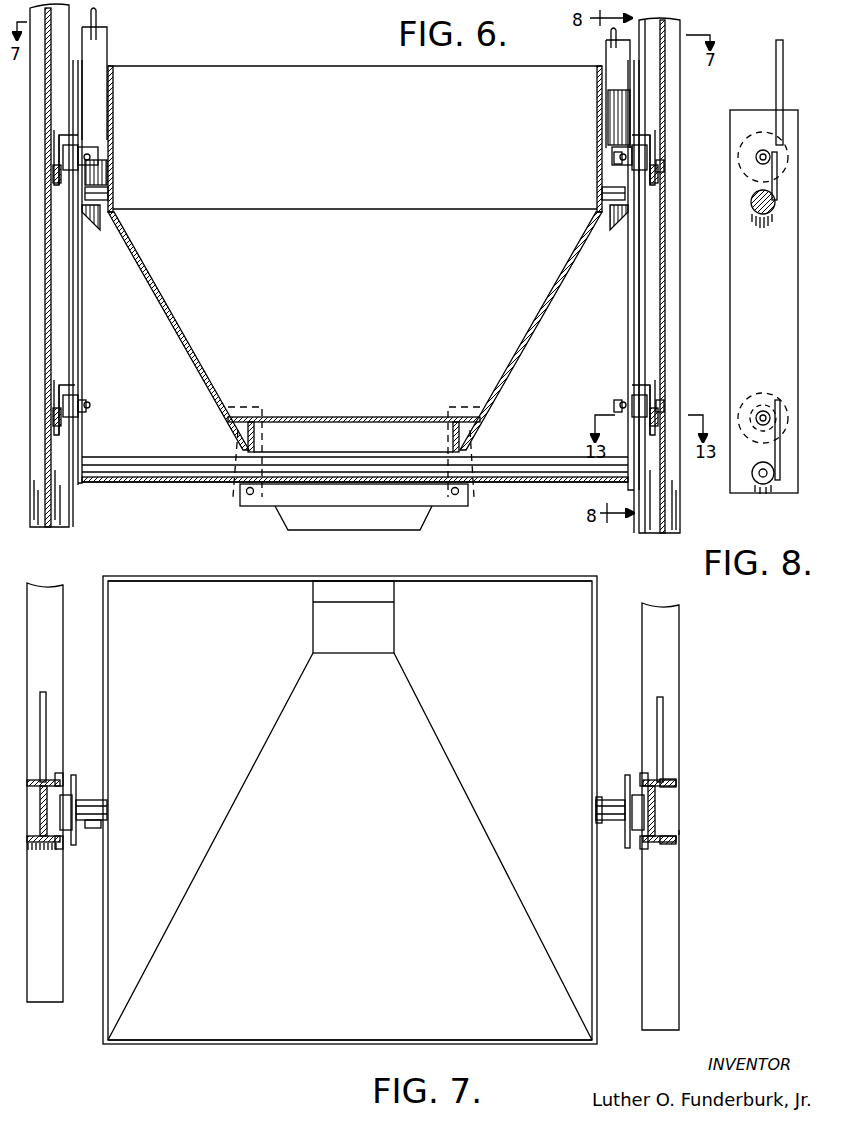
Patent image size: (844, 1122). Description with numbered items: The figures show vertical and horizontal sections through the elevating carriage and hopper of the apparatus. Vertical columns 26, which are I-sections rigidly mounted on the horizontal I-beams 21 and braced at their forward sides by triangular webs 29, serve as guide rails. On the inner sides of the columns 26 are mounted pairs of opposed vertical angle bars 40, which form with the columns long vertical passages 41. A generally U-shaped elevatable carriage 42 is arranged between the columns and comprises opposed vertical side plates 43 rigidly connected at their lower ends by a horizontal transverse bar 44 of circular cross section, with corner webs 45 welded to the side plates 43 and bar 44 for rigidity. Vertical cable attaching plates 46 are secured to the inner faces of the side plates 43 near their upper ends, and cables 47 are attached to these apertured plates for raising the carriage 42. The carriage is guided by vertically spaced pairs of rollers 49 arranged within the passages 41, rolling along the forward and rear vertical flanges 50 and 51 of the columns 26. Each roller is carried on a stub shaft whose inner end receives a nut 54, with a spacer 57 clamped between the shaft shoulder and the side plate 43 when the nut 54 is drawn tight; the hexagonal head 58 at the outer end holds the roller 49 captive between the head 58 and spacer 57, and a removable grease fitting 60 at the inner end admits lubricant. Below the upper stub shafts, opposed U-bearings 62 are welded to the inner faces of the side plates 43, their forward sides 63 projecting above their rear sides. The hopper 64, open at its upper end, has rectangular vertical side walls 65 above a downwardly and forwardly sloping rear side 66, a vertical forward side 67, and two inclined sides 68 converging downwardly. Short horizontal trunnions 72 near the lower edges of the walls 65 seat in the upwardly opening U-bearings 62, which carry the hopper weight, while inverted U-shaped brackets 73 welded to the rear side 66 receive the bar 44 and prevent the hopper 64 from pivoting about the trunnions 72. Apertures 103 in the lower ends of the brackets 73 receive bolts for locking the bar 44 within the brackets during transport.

In FIG. 7, the horizontal I-beams 21 is at (60, 935).
In FIG. 6, the vertical columns 26 is at (693, 510).
In FIG. 7, the vertical columns 26 is at (679, 832).
In FIG. 7, the triangular webs 29 is at (46, 705).
In FIG. 6, the vertical angle bars 40 is at (68, 290).
In FIG. 7, the vertical angle bars 40 is at (62, 774).
In FIG. 6, the vertical passages 41 is at (62, 140).
In FIG. 7, the vertical passages 41 is at (44, 826).
In FIG. 6, the carriage 42 is at (532, 478).
In FIG. 8, the carriage 42 is at (760, 490).
In FIG. 6, the side plates 43 is at (82, 328).
In FIG. 8, the side plates 43 is at (764, 301).
In FIG. 7, the side plates 43 is at (76, 782).
In FIG. 6, the horizontal transverse bar 44 is at (174, 478).
In FIG. 8, the corner webs 45 is at (775, 450).
In FIG. 6, the cable attaching plates 46 is at (108, 40).
In FIG. 6, the cables 47 is at (97, 17).
In FIG. 6, the rollers 49 is at (57, 130).
In FIG. 8, the rollers 49 is at (752, 148).
In FIG. 7, the rollers 49 is at (40, 852).
In FIG. 7, the forward vertical flange 50 is at (666, 844).
In FIG. 7, the rear vertical flange 51 is at (665, 783).
In FIG. 6, the nuts 54 is at (91, 158).
In FIG. 8, the nuts 54 is at (768, 160).
In FIG. 6, the spacers 57 is at (78, 146).
In FIG. 7, the spacers 57 is at (72, 800).
In FIG. 6, the hexagonal heads 58 is at (662, 168).
In FIG. 6, the grease fittings 60 is at (88, 410).
In FIG. 6, the U-bearings 62 is at (92, 215).
In FIG. 8, the U-bearings 62 is at (760, 218).
In FIG. 7, the U-bearings 62 is at (101, 824).
In FIG. 6, the forward sides of U-bearings 63 is at (98, 148).
In FIG. 8, the forward sides of U-bearings 63 is at (771, 195).
In FIG. 7, the forward sides of U-bearings 63 is at (598, 800).
In FIG. 6, the hopper 64 is at (288, 64).
In FIG. 7, the hopper 64 is at (207, 576).
In FIG. 6, the vertical side walls 65 is at (113, 78).
In FIG. 7, the vertical side walls 65 is at (590, 600).
In FIG. 7, the rear side of hopper 66 is at (272, 1045).
In FIG. 7, the forward side of hopper 67 is at (482, 576).
In FIG. 6, the inclined sides of hopper 68 is at (186, 342).
In FIG. 7, the inclined sides of hopper 68 is at (350, 810).
In FIG. 6, the trunnions 72 is at (108, 194).
In FIG. 7, the trunnions 72 is at (107, 810).
In FIG. 6, the inverted U-shaped brackets 73 is at (246, 435).
In FIG. 6, the apertures 103 is at (250, 495).